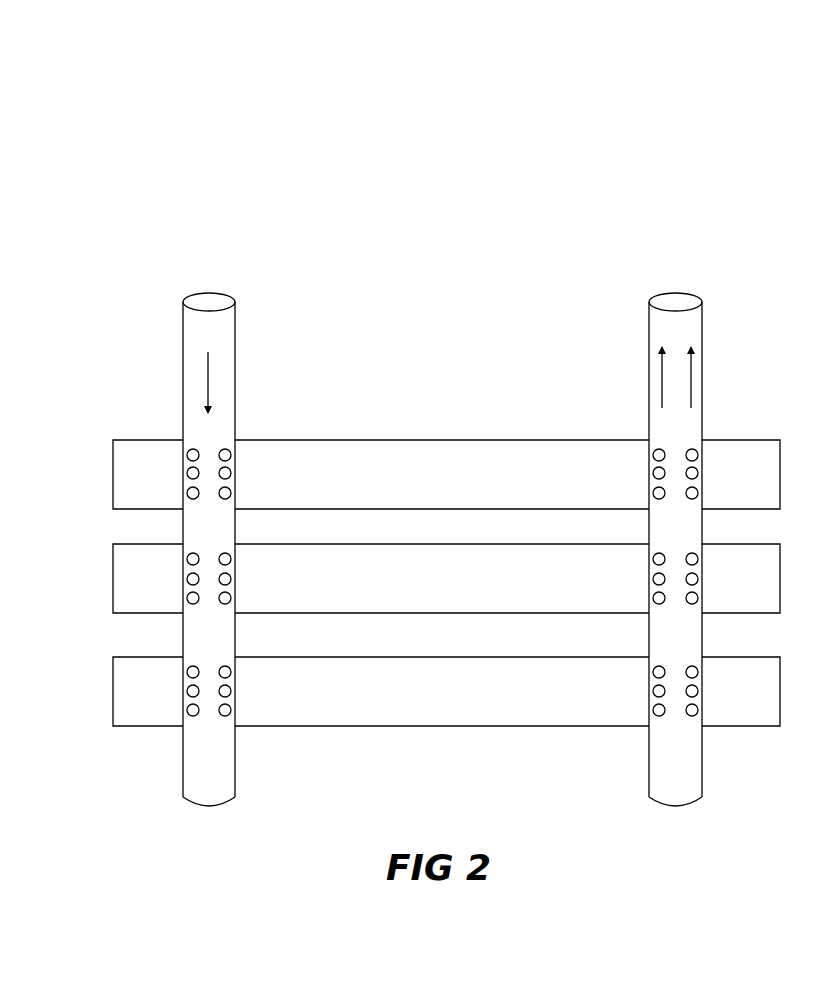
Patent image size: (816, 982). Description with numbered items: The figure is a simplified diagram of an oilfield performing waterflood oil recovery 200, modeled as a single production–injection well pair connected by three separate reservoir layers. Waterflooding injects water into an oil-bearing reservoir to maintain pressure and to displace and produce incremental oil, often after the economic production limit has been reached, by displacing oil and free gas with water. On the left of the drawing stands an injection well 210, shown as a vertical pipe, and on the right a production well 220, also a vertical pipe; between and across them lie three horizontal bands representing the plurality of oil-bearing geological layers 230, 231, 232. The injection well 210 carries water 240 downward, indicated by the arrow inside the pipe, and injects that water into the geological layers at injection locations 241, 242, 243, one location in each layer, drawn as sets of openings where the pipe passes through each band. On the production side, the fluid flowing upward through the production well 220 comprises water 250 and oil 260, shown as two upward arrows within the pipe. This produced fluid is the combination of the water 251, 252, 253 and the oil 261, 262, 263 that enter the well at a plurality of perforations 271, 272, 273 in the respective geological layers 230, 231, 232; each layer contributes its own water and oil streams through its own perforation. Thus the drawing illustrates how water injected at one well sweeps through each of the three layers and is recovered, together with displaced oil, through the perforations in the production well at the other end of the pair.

The waterflood oil recovery 200 is at (423, 200).
The injection well 210 is at (213, 296).
The production well 220 is at (680, 296).
The oil-bearing geological layer 230 is at (446, 474).
The oil-bearing geological layer 231 is at (446, 578).
The oil-bearing geological layer 232 is at (446, 691).
The water 240 is at (208, 365).
The injection location 241 is at (238, 474).
The injection location 242 is at (238, 579).
The injection location 243 is at (238, 691).
The water 250 is at (661, 381).
The recovered water 251 is at (645, 462).
The recovered water 252 is at (645, 566).
The recovered water 253 is at (645, 674).
The oil 260 is at (692, 383).
The recovered oil 261 is at (645, 493).
The recovered oil 262 is at (645, 597).
The recovered oil 263 is at (645, 705).
The perforation 271 is at (677, 476).
The perforation 272 is at (677, 580).
The perforation 273 is at (677, 691).